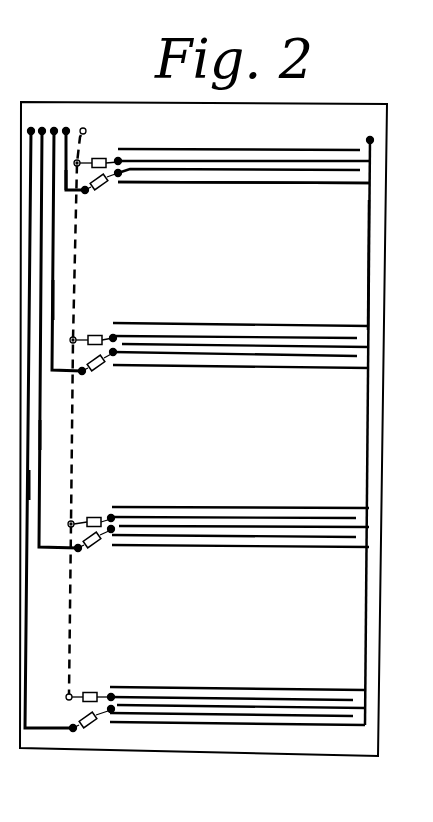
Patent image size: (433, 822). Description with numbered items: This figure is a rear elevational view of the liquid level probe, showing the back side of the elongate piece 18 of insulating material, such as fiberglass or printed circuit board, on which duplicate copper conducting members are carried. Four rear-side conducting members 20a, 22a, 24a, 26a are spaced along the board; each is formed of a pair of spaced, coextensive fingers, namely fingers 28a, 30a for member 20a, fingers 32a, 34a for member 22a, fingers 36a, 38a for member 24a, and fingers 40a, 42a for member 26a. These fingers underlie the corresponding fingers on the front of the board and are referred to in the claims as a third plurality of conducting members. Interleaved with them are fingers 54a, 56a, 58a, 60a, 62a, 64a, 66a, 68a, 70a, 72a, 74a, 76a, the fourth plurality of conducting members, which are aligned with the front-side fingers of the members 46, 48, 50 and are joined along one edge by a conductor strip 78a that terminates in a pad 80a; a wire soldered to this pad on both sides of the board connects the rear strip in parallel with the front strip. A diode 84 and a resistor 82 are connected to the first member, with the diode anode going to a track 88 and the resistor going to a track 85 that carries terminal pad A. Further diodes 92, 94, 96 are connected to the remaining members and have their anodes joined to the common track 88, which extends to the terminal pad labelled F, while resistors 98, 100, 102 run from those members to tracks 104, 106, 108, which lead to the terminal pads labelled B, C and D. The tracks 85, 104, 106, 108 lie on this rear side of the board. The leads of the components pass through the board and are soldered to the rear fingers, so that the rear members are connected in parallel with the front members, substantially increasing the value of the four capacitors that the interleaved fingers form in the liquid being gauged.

The elongate piece of insulating material 18 is at (378, 677).
The pad 80a is at (367, 135).
The conductor strip 78a is at (367, 265).
The terminal pad D is at (31, 128).
The terminal pad C is at (42, 128).
The terminal pad B is at (55, 128).
The terminal pad a A is at (67, 128).
The terminal pad F is at (85, 128).
The track 88 is at (76, 433).
The track 85 is at (69, 208).
The track 104 is at (53, 298).
The track 106 is at (40, 433).
The track 108 is at (30, 480).
The diode 84 is at (97, 157).
The resistor 82 is at (96, 190).
The diode 92 is at (95, 333).
The resistor 98 is at (96, 368).
The diode 94 is at (95, 516).
The resistor 100 is at (94, 553).
The diode 96 is at (90, 690).
The resistor 102 is at (92, 722).
The conducting member 20a is at (243, 172).
The conducting member 22a is at (241, 350).
The conducting member 24a is at (240, 533).
The conducting member 26a is at (237, 698).
The finger 28a is at (204, 158).
The finger 30a is at (308, 185).
The finger 32a is at (134, 334).
The finger 34a is at (300, 358).
The finger 36a is at (128, 516).
The finger 38a is at (295, 539).
The finger 40a is at (128, 692).
The finger 42a is at (188, 722).
The finger 54a is at (307, 149).
The finger 56a is at (151, 171).
The finger 58a is at (197, 185).
The finger 60a is at (212, 324).
The finger 62a is at (307, 346).
The finger 64a is at (173, 368).
The finger 66a is at (203, 508).
The finger 68a is at (273, 526).
The finger 70a is at (157, 548).
The finger 72a is at (183, 687).
The finger 74a is at (296, 690).
The finger 76a is at (282, 727).
The conducting member 46 is at (427, 358).
The conducting member 48 is at (426, 525).
The conducting member 50 is at (424, 716).